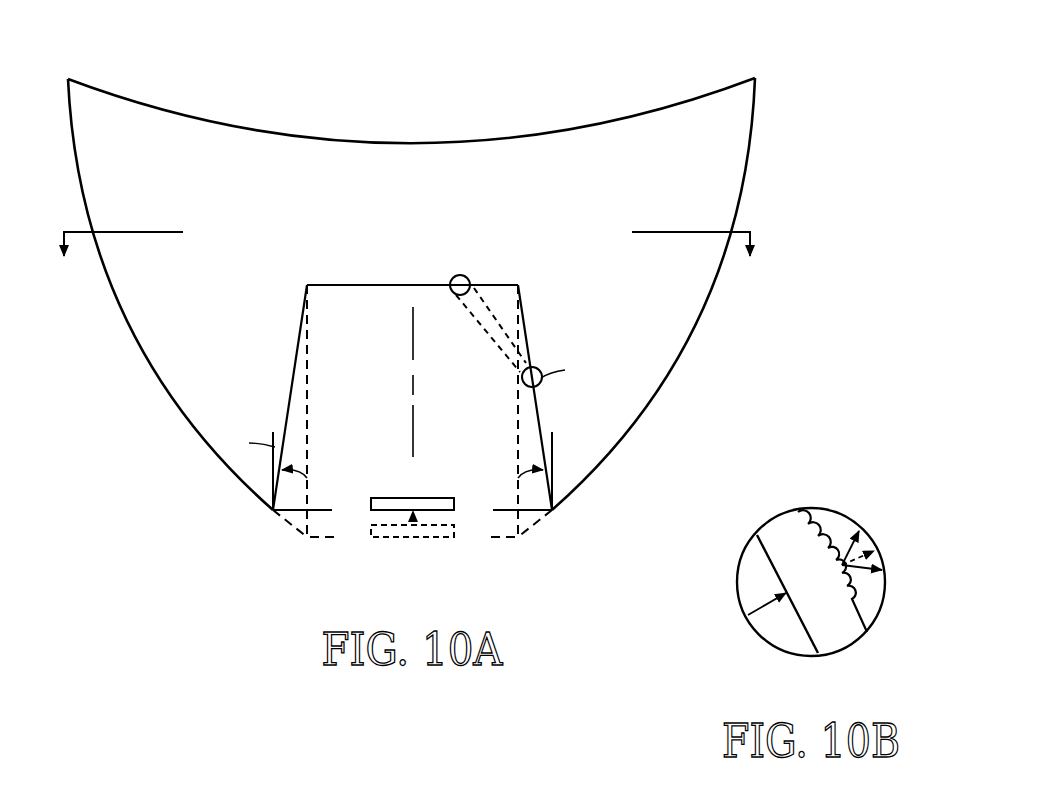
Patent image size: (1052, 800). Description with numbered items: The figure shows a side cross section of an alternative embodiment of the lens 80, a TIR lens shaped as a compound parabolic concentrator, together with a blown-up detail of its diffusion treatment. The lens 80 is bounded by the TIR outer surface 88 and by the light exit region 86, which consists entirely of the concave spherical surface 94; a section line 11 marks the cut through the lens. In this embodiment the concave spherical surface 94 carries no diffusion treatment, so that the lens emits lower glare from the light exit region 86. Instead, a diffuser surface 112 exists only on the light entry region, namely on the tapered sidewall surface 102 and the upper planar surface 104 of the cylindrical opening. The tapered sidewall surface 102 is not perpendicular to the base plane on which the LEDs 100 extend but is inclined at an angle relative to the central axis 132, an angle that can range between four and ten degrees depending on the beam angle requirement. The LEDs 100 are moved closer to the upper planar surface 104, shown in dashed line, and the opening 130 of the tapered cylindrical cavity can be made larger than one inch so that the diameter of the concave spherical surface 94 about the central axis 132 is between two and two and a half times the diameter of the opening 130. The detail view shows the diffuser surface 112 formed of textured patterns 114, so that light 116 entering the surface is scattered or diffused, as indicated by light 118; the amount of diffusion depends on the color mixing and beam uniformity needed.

In FIG. 10A, the lens 80 is at (52, 57).
In FIG. 10A, the light exit region 86 is at (555, 82).
In FIG. 10A, the TIR outer surface 88 is at (145, 365).
In FIG. 10A, the concave spherical surface 94 is at (648, 112).
In FIG. 10A, the section line 11 is at (408, 245).
In FIG. 10A, the upper planar surface 104 is at (383, 283).
In FIG. 10A, the tapered sidewall surface 102 is at (523, 320).
In FIG. 10A, the central axis 132 is at (414, 385).
In FIG. 10A, the LEDs 100 is at (385, 498).
In FIG. 10A, the opening 130 is at (468, 550).
In FIG. 10B, the diffuser surface 112 is at (817, 497).
In FIG. 10B, the textured patterns 114 is at (843, 603).
In FIG. 10B, the light 116 is at (775, 615).
In FIG. 10B, the light 118 is at (848, 548).